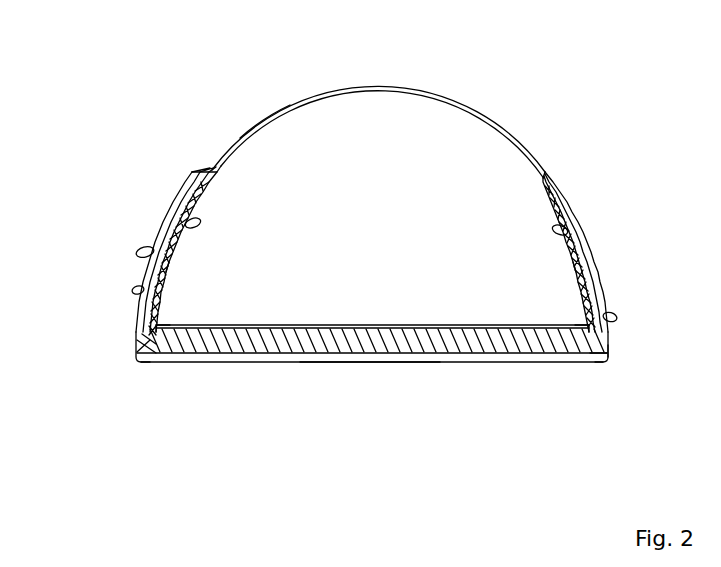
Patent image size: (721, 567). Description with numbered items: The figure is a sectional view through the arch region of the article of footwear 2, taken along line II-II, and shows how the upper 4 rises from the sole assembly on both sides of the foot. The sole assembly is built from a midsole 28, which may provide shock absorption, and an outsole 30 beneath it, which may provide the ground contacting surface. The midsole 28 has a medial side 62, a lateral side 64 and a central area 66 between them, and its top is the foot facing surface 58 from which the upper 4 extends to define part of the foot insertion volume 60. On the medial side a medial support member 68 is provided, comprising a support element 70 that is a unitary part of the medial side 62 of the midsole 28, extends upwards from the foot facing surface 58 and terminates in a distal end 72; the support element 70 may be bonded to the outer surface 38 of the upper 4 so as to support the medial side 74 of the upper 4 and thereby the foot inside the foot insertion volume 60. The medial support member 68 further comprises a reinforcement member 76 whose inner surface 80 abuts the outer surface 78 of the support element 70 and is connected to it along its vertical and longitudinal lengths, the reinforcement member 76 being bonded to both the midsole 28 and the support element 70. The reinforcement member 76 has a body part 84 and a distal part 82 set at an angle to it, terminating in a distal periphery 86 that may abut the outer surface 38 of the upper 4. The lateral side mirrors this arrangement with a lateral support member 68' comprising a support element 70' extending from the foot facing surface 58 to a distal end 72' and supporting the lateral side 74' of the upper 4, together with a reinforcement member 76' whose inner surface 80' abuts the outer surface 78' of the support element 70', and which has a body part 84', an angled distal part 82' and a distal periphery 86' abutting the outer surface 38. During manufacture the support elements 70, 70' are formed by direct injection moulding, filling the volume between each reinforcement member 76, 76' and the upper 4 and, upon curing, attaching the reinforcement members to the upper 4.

The article of footwear 2 is at (540, 70).
The upper 4 is at (306, 98).
The midsole 28 is at (550, 365).
The outsole 30 is at (615, 362).
The outer surface of the upper 38 is at (263, 122).
The foot facing surface 58 is at (458, 360).
The foot insertion volume 60 is at (394, 234).
The medial side 62 is at (155, 365).
The lateral side 64 is at (587, 360).
The central area 66 is at (372, 362).
The medial support member 68 is at (129, 242).
The lateral support member 68' is at (619, 242).
The support element 70 is at (221, 193).
The support element 70' is at (519, 180).
The distal end 72 is at (157, 217).
The distal end 72' is at (589, 231).
The medial side of the upper 74 is at (191, 316).
The lateral side of the upper 74' is at (555, 317).
The reinforcement member 76 is at (89, 316).
The reinforcement member 76' is at (641, 341).
The outer surface of the support element 78 is at (198, 272).
The outer surface of the support element 78' is at (600, 283).
The inner surface 80 is at (148, 216).
The inner surface 80' is at (612, 217).
The distal part 82 is at (161, 195).
The distal part 82' is at (597, 217).
The body part 84 is at (118, 268).
The body part 84' is at (634, 280).
The distal periphery 86 is at (185, 186).
The distal periphery 86' is at (581, 208).